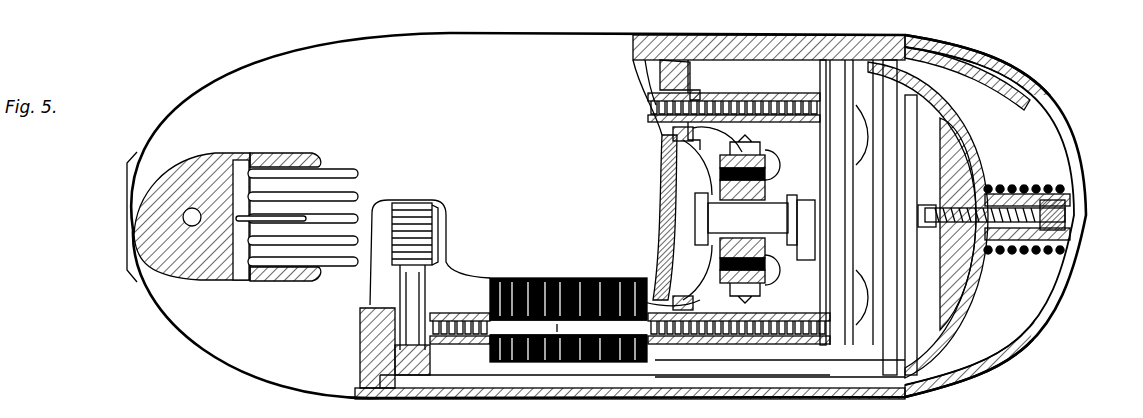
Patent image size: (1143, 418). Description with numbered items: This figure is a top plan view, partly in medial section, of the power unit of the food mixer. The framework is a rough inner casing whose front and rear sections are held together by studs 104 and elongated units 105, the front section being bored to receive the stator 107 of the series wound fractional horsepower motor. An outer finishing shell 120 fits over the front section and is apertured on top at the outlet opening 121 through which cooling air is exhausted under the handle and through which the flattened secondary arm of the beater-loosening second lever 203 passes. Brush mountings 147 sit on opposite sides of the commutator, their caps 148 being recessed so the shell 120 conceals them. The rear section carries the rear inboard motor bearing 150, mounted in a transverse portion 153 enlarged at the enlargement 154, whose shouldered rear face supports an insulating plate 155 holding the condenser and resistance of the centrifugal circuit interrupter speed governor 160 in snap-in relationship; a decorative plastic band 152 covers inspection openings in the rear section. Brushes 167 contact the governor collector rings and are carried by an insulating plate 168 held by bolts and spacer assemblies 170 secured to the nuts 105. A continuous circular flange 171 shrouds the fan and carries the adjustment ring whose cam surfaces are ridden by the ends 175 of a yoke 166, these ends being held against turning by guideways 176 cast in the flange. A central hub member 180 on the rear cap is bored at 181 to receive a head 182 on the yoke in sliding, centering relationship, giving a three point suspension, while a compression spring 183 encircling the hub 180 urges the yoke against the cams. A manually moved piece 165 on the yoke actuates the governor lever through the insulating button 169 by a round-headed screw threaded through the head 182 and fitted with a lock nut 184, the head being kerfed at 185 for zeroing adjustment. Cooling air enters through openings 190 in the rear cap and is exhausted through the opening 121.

The studs 104 is at (520, 278).
The elongated units 105 is at (719, 345).
The stator 107 is at (573, 278).
The outer finishing shell 120 is at (285, 368).
The outlet opening 121 is at (340, 171).
The brush mountings 147 is at (412, 298).
The caps 148 is at (400, 377).
The rear inboard motor bearing 150 is at (660, 186).
The decorative plastic band 152 is at (755, 398).
The transverse portion 153 is at (695, 140).
The enlargement 154 is at (660, 248).
The plate 155 is at (770, 140).
The centrifugal circuit interrupter speed governor 160 is at (888, 305).
The manually moved piece 165 is at (925, 228).
The yoke 166 is at (976, 175).
The brushes 167 is at (800, 168).
The insulating plate 168 is at (823, 345).
The insulating button 169 is at (860, 398).
The bolts and spacer assemblies 170 is at (772, 345).
The continuous circular flange 171 is at (920, 388).
The ends of the yoke 175 is at (918, 85).
The guideways 176 is at (907, 48).
The central hub member 180 is at (1072, 262).
The bore 181 is at (1078, 236).
The head 182 is at (1070, 198).
The compression spring 183 is at (1025, 182).
The lock nut 184 is at (1068, 211).
The kerf 185 is at (1070, 224).
The openings 190 is at (1062, 302).
The second lever 203 is at (275, 222).